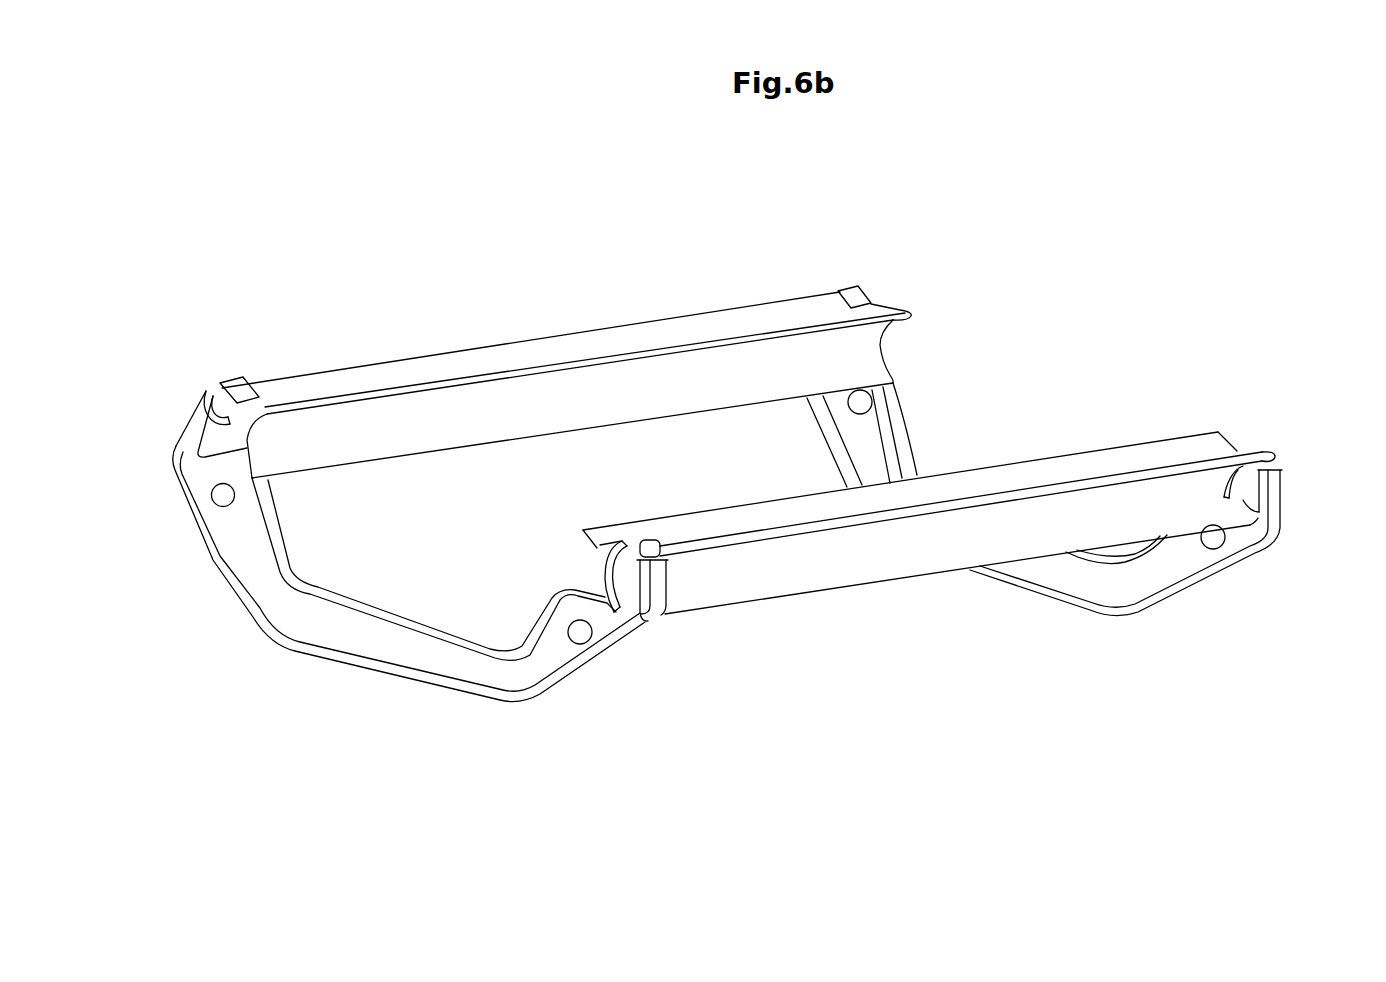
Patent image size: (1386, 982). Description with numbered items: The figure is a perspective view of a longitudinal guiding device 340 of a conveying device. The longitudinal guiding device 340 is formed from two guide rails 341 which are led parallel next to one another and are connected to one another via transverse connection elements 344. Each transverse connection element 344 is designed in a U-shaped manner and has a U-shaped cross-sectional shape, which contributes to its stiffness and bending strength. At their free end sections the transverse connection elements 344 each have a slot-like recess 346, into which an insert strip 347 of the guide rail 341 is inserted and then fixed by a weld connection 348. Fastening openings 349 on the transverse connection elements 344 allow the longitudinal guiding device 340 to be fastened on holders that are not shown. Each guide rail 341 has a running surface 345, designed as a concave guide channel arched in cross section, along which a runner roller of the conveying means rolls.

The longitudinal guiding device 340 is at (493, 279).
The guide rail 341 is at (527, 355).
The transverse connection element 344 is at (383, 662).
The running surface 345 is at (375, 443).
The slot-like recess 346 is at (613, 570).
The insert strip 347 is at (198, 458).
The weld connection 348 is at (227, 418).
The fastening opening 349 is at (213, 497).